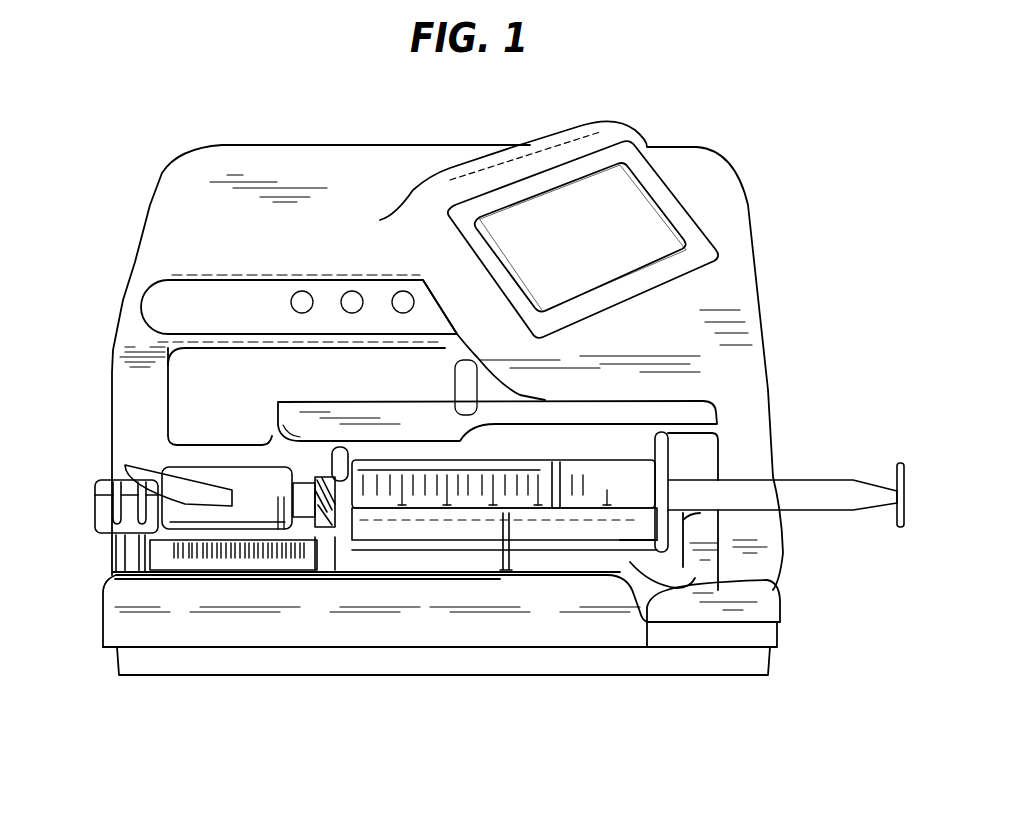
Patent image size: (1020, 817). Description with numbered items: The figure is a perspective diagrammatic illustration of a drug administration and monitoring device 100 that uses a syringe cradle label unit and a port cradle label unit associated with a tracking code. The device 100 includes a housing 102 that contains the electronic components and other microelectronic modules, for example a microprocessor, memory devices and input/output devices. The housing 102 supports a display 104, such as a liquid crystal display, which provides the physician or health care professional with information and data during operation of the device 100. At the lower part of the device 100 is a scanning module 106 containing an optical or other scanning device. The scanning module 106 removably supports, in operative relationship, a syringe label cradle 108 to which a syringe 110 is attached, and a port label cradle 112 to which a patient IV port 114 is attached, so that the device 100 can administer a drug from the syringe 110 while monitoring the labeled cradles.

The device 100 is at (326, 100).
The housing 102 is at (748, 240).
The display 104 is at (627, 182).
The scanning module 106 is at (148, 680).
The syringe label cradle 108 is at (777, 587).
The syringe 110 is at (396, 475).
The port label cradle 112 is at (150, 556).
The patient IV port 114 is at (195, 490).